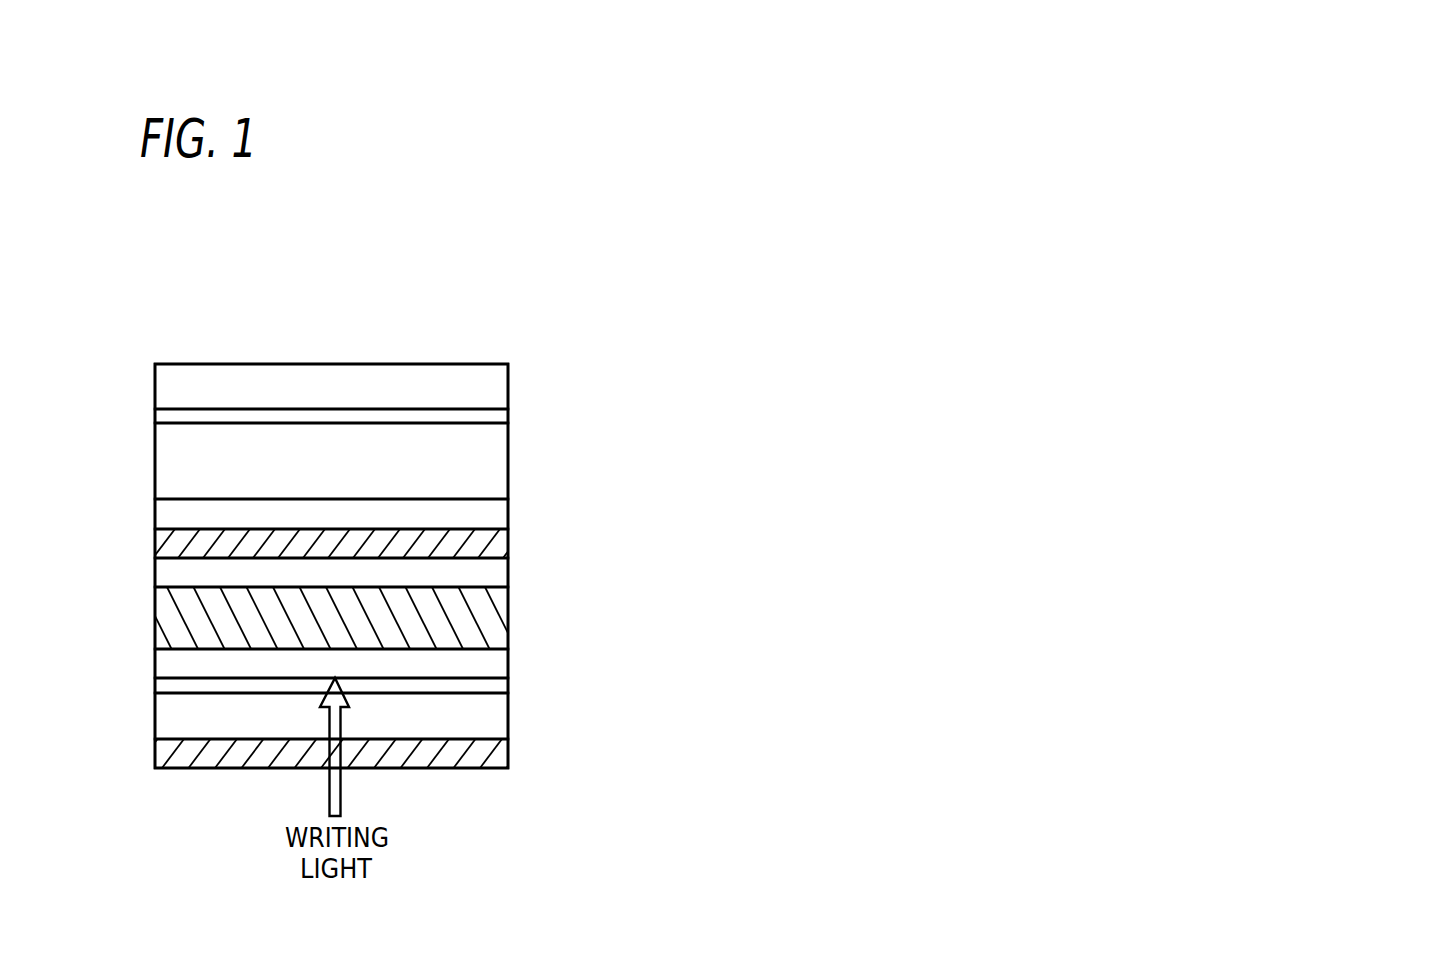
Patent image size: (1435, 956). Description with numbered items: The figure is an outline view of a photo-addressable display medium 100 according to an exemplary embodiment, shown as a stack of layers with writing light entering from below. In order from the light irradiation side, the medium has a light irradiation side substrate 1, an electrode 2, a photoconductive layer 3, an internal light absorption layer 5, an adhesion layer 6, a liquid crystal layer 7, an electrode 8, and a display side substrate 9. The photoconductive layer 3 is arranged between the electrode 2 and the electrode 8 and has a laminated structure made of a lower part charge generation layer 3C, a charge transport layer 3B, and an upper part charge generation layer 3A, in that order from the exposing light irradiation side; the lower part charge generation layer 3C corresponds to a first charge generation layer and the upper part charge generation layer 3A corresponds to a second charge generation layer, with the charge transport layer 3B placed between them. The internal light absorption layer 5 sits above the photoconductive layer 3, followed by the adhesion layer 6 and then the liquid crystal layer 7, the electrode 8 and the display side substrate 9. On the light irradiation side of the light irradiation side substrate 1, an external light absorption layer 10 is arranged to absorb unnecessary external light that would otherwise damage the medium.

The photo-addressable display medium 100 is at (534, 294).
The display side substrate 9 is at (503, 383).
The electrode 8 is at (503, 416).
The liquid crystal layer 7 is at (503, 463).
The adhesion layer 6 is at (503, 513).
The internal light absorption layer 5 is at (503, 546).
The photoconductive layer 3 is at (765, 611).
The upper part charge generation layer 3A is at (503, 580).
The charge transport layer 3B is at (503, 620).
The lower part charge generation layer 3C is at (503, 665).
The electrode 2 is at (503, 685).
The light irradiation side substrate 1 is at (503, 718).
The external light absorption layer 10 is at (505, 757).